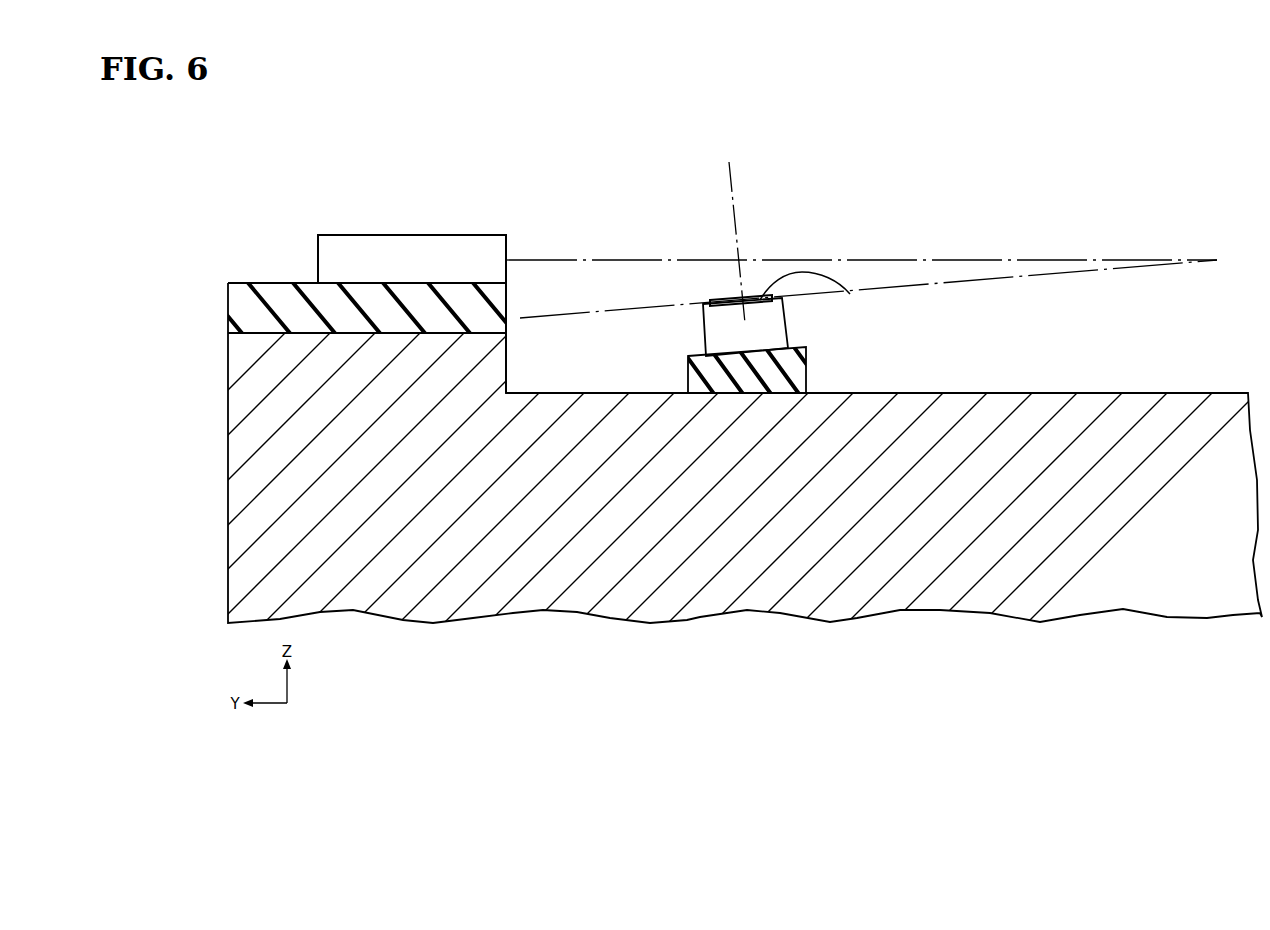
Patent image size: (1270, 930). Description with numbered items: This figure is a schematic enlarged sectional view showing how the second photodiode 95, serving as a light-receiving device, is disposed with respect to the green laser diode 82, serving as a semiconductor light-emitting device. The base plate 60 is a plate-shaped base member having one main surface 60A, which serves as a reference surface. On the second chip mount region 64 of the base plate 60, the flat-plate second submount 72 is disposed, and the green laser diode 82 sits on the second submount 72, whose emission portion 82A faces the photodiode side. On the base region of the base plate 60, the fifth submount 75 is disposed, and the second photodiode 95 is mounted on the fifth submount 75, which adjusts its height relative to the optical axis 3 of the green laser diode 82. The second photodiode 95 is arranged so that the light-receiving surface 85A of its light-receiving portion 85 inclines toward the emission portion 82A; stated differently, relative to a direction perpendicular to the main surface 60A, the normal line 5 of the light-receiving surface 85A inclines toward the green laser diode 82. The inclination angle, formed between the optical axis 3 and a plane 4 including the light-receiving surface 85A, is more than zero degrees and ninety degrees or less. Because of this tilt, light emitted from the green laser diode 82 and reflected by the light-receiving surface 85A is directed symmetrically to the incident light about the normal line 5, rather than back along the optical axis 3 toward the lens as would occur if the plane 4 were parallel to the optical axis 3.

The optical axis 3 is at (975, 260).
The plane 4 is at (917, 285).
The normal line 5 is at (732, 203).
The base plate 60 is at (990, 540).
The main surface 60A is at (552, 392).
The second chip mount region 64 is at (297, 372).
The second submount 72 is at (247, 308).
The fifth submount 75 is at (765, 377).
The green laser diode 82 is at (413, 258).
The emission portion 82A is at (511, 248).
The light-receiving portion 85 is at (757, 303).
The light-receiving surface 85A is at (850, 294).
The second photodiode 95 is at (725, 333).